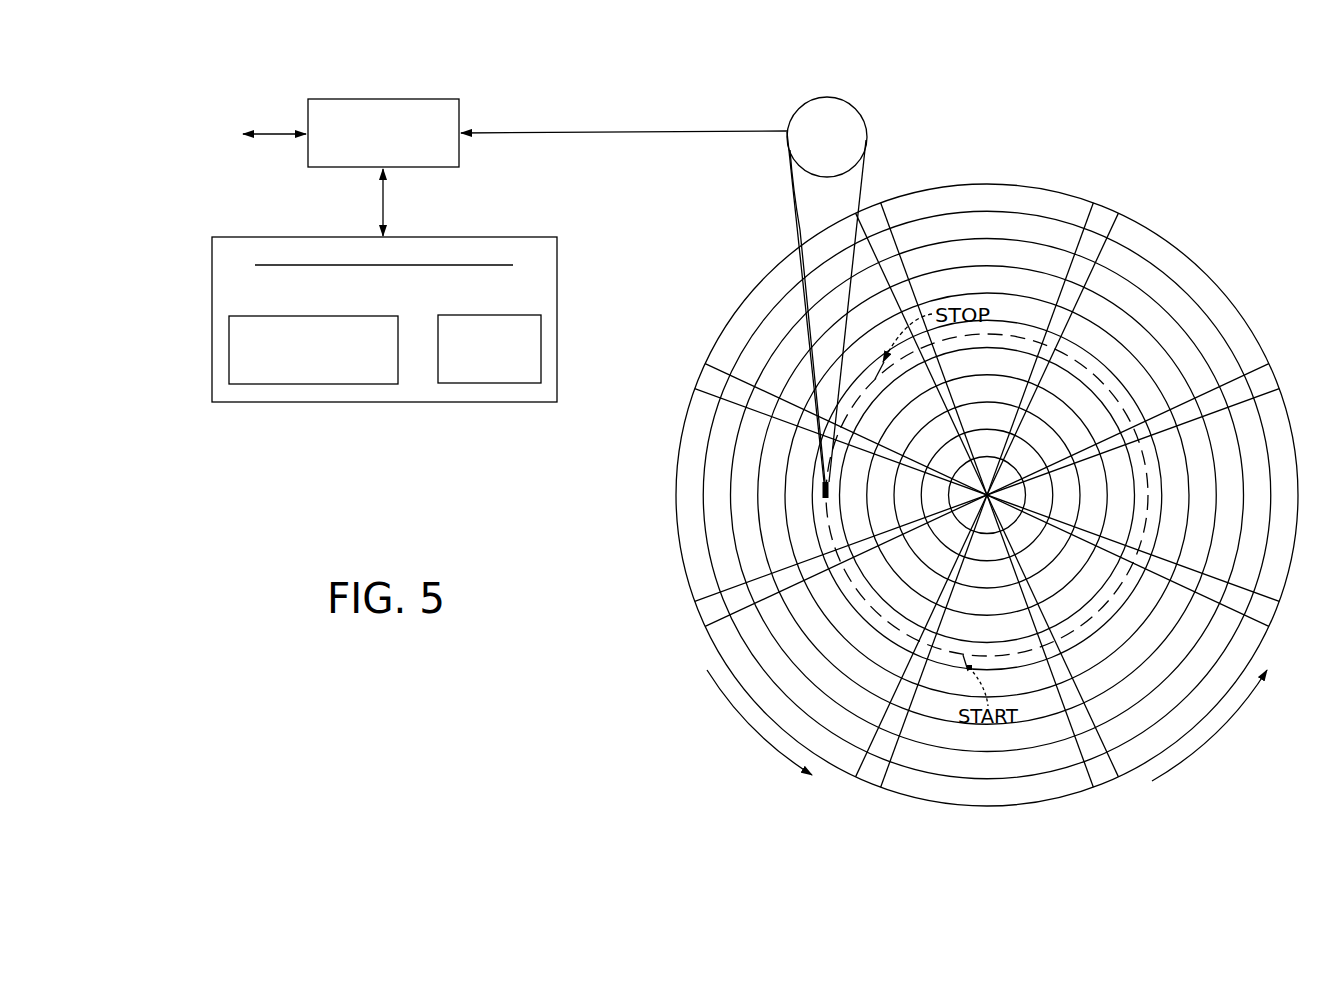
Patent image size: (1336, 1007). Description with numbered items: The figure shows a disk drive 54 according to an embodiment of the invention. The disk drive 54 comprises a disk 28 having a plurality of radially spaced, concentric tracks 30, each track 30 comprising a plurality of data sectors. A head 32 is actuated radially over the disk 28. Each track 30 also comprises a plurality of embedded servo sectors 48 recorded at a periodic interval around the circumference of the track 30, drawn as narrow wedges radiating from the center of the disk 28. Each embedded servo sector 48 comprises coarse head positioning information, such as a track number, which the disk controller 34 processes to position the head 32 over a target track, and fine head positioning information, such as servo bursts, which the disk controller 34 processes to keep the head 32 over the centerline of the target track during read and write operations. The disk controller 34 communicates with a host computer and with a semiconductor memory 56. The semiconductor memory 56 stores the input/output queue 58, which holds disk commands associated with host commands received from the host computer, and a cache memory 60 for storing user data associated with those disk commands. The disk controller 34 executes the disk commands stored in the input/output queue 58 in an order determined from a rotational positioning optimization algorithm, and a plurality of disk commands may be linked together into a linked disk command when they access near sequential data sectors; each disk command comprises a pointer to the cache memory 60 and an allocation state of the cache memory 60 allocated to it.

The disk 28 is at (1157, 217).
The concentric tracks 30 is at (1038, 233).
The head 32 is at (822, 505).
The disk controller 34 is at (461, 102).
The embedded servo sectors 48 is at (877, 215).
The disk drive 54 is at (148, 175).
The semiconductor memory 56 is at (557, 308).
The input/output queue 58 is at (313, 316).
The cache memory 60 is at (488, 315).